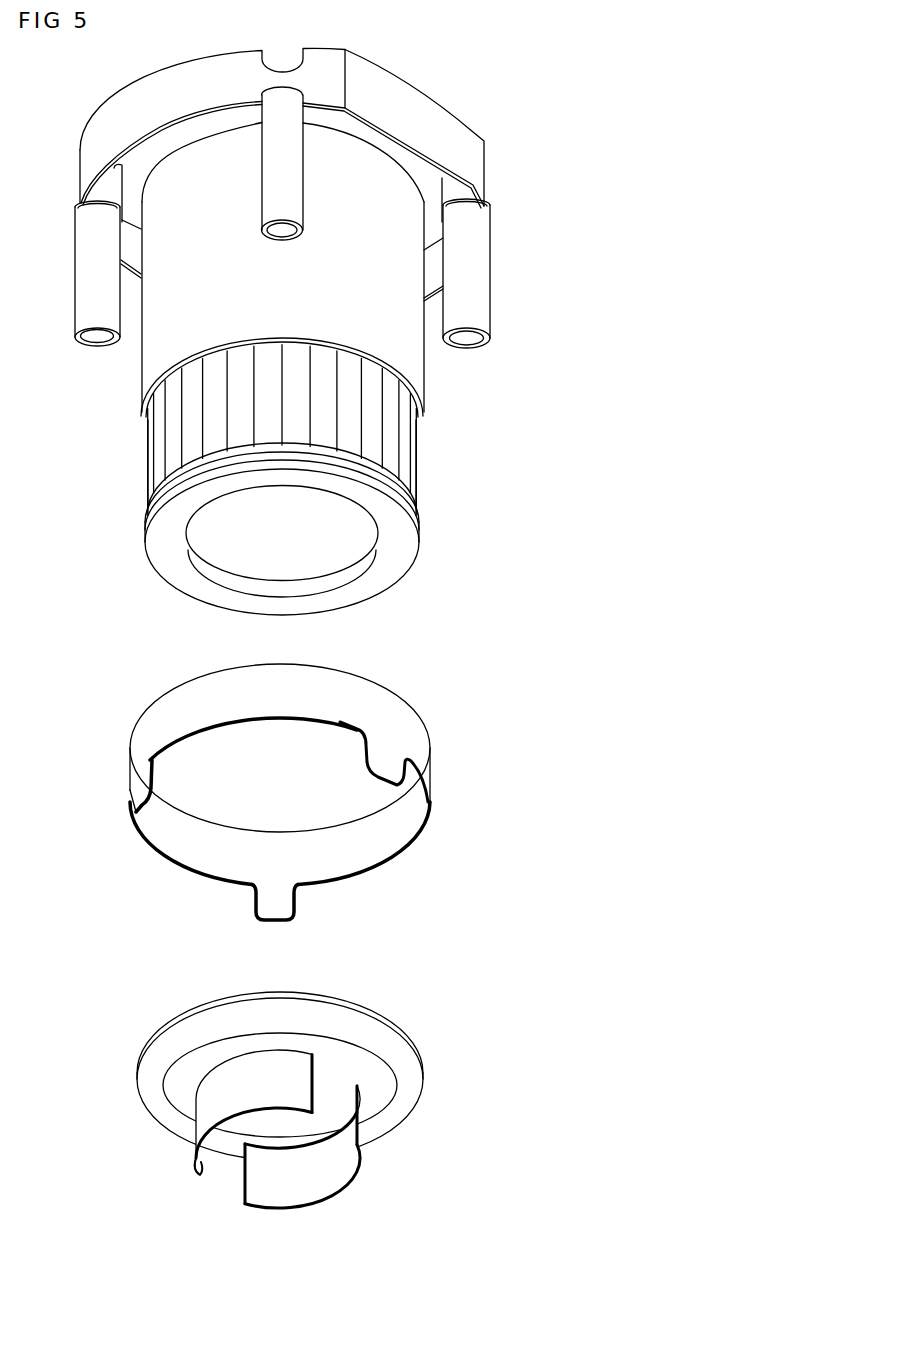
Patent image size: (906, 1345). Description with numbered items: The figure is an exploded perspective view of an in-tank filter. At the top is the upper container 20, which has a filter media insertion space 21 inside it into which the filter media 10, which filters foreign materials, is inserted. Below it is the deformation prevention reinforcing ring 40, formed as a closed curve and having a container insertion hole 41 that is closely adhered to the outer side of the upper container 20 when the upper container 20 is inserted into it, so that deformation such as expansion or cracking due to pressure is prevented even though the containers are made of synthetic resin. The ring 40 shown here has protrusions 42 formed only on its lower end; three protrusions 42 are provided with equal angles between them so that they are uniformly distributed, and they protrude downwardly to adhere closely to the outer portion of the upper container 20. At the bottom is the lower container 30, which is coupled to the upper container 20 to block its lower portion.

The filter media 10 is at (322, 331).
The upper container 20 is at (397, 345).
The filter media insertion space 21 is at (173, 404).
The lower container 30 is at (400, 1063).
The deformation prevention reinforcing ring 40 is at (271, 804).
The container insertion hole 41 is at (189, 849).
The protrusions 42 is at (396, 746).